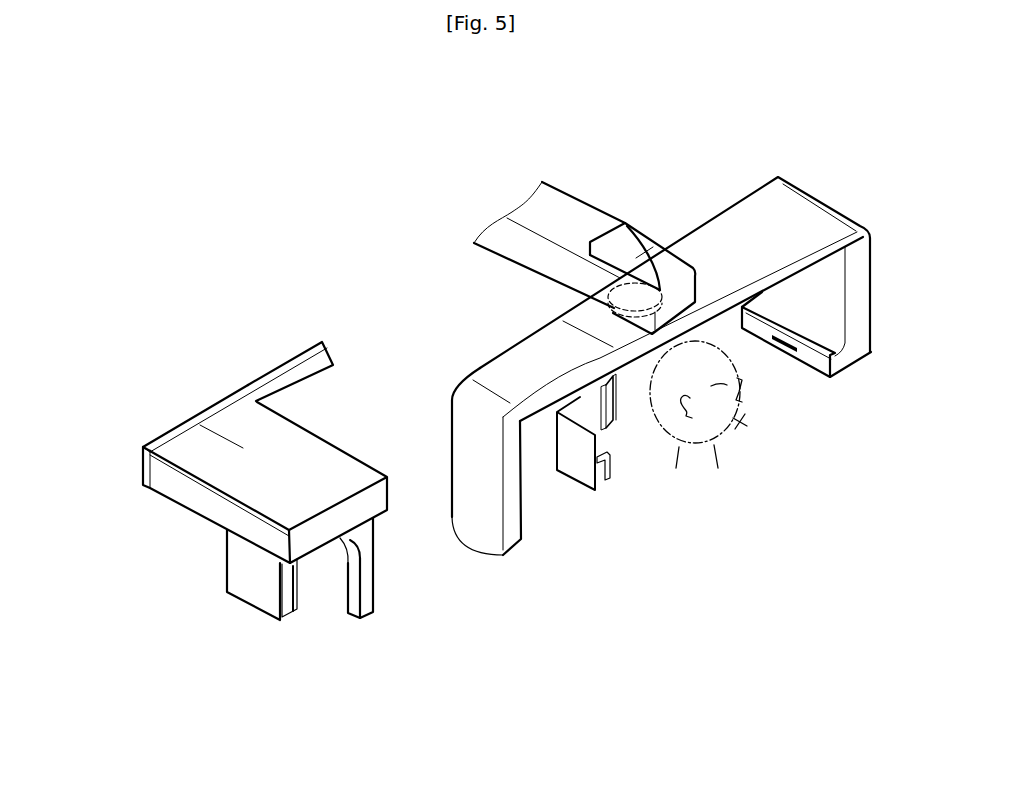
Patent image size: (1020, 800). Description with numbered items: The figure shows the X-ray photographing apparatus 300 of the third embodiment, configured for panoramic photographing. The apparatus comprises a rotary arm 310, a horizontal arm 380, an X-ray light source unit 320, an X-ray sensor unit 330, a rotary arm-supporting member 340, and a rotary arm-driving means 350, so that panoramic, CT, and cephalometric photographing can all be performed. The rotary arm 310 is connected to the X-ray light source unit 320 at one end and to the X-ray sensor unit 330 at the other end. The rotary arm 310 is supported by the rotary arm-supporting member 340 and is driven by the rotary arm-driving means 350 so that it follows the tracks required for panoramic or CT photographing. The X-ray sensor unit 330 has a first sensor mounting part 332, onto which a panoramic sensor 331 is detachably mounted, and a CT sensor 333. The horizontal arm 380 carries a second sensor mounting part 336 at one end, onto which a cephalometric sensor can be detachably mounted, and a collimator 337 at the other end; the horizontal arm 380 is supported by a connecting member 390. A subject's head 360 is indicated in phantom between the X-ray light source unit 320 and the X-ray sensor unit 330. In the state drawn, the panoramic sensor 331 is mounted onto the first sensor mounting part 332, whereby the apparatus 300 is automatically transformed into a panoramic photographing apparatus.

The X-ray photographing apparatus 300 is at (150, 322).
The rotary arm 310 is at (735, 220).
The X-ray light source unit 320 is at (851, 353).
The X-ray sensor unit 330 is at (693, 497).
The panoramic sensor 331 is at (588, 478).
The first sensor mounting part 332 is at (615, 417).
The CT sensor 333 is at (507, 526).
The second sensor mounting part 336 is at (284, 598).
The collimator 337 is at (373, 598).
The rotary arm-supporting member 340 is at (538, 213).
The rotary arm-driving means 350 is at (633, 293).
The user's head 360 is at (733, 423).
The horizontal arm 380 is at (256, 400).
The connecting member 390 is at (305, 372).